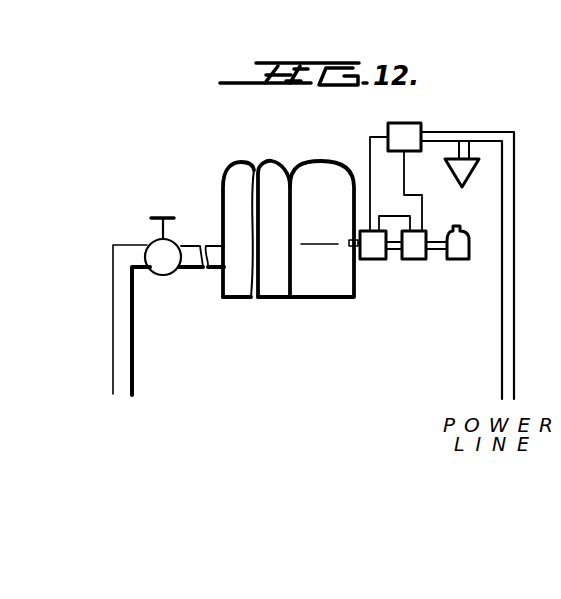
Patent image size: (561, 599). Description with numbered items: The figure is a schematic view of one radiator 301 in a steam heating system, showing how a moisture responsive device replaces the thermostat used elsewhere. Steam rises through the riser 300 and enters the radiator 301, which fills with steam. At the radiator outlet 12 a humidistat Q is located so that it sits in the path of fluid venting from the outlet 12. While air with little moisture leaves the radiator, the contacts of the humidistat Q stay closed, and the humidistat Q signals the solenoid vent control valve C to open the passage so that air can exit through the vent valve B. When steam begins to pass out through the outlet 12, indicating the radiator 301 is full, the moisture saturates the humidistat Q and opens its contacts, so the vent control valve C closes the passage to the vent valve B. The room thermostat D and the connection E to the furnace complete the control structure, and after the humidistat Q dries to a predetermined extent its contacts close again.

The outlet 12 is at (288, 247).
The riser 300 is at (127, 366).
The radiator 301 is at (319, 232).
The humidistat Q is at (366, 251).
The vent control valve C is at (404, 251).
The vent valve B is at (447, 251).
The room thermostat D is at (404, 137).
The connection to the furnace E is at (461, 171).